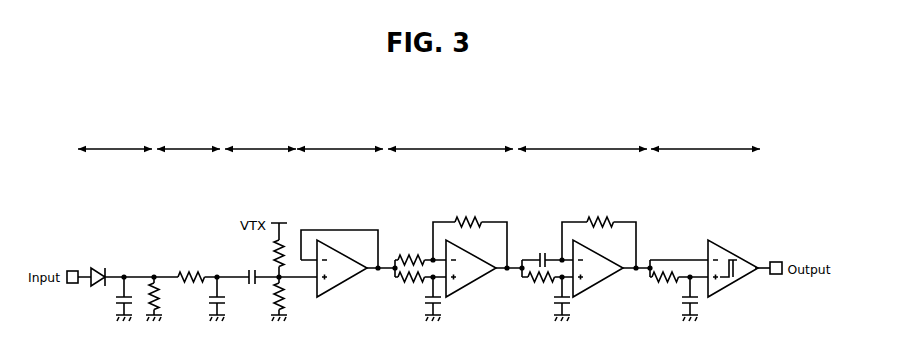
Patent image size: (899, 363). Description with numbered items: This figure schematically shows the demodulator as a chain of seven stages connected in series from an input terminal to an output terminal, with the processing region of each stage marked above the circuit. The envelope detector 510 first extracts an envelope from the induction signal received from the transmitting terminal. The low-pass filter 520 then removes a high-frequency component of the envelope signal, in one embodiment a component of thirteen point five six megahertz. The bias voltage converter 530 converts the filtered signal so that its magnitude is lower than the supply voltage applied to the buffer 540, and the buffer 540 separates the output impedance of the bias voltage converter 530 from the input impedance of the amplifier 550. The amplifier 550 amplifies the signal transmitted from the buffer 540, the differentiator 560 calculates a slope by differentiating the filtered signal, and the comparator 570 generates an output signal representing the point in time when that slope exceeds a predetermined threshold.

The envelope detector 510 is at (116, 152).
The low-pass filter 520 is at (189, 152).
The bias voltage converter 530 is at (259, 152).
The buffer 540 is at (339, 152).
The amplifier 550 is at (449, 152).
The differentiator 560 is at (580, 152).
The comparator 570 is at (704, 152).